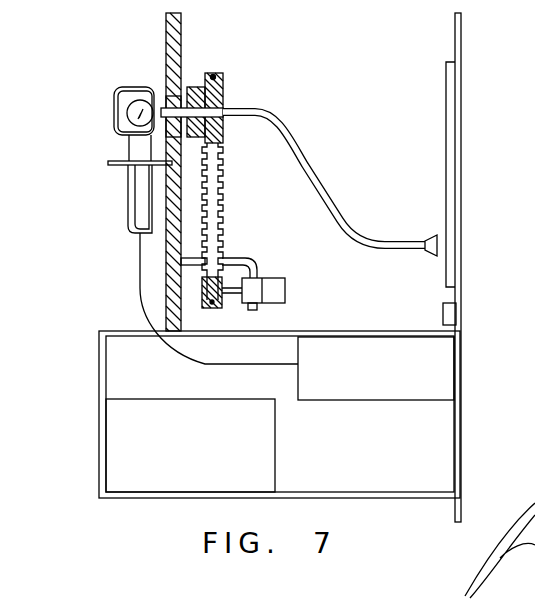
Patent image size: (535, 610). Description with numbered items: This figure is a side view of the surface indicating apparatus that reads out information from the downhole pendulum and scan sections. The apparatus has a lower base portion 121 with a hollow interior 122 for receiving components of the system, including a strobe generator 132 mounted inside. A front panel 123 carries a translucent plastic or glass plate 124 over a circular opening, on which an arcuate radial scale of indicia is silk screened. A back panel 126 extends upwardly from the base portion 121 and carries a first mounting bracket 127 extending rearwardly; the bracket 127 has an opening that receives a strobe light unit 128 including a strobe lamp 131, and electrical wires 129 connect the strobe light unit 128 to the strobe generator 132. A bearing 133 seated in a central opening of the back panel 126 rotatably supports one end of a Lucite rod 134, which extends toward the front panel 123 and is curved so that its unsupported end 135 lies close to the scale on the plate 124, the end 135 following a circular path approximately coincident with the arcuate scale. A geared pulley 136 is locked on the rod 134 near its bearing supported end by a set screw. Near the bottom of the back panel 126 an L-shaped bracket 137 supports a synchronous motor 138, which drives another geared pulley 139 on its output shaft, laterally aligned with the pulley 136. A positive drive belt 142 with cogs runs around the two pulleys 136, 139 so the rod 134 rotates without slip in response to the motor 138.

The lower base portion 121 is at (96, 367).
The hollow interior 122 is at (352, 453).
The front panel 123 is at (464, 298).
The translucent plate 124 is at (448, 76).
The back panel 126 is at (166, 282).
The first mounting bracket 127 is at (108, 165).
The strobe light unit 128 is at (128, 153).
The electrical wires 129 is at (138, 253).
The strobe lamp 131 is at (127, 110).
The strobe generator 132 is at (345, 336).
The bearing 133 is at (166, 100).
The Lucite rod 134 is at (263, 110).
The unsupported rod end 135 is at (425, 242).
The geared pulley 136 is at (223, 82).
The L-shaped bracket 137 is at (257, 272).
The synchronous motor 138 is at (287, 296).
The geared pulley 139 is at (203, 302).
The positive drive belt 142 is at (223, 186).